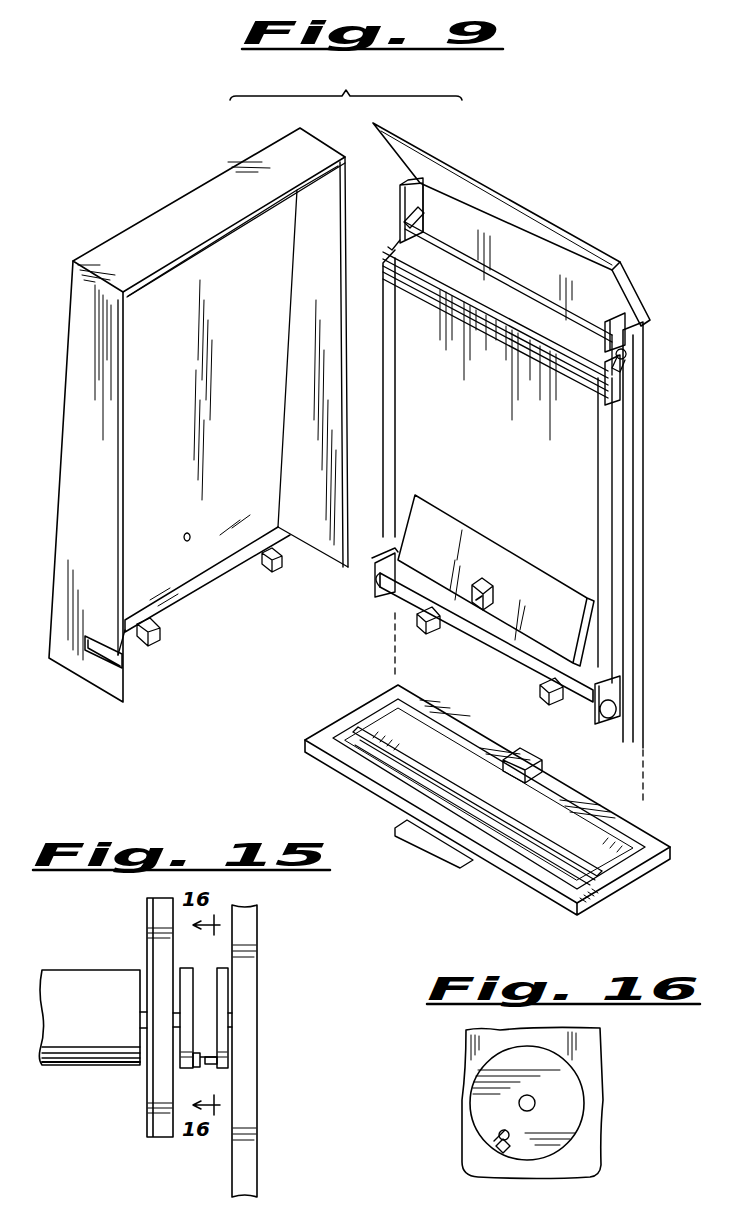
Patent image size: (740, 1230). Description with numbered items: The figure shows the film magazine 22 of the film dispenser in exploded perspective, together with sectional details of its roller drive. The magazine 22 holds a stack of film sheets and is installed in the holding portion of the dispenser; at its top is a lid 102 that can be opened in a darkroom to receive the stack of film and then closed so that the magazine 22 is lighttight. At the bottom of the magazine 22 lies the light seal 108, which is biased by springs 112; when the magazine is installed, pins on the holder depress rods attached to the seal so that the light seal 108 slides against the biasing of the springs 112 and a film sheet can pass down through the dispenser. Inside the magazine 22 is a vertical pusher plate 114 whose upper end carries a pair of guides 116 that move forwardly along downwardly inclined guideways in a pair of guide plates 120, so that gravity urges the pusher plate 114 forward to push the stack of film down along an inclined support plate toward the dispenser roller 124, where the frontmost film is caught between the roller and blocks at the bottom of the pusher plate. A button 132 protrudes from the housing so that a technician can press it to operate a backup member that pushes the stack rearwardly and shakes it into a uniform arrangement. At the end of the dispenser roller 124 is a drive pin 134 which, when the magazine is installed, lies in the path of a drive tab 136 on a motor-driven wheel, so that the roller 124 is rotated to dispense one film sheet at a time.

In FIG. 9, the film magazine 22 is at (275, 677).
In FIG. 9, the lid 102 is at (636, 292).
In FIG. 9, the light seal 108 is at (386, 746).
In FIG. 9, the springs 112 is at (385, 726).
In FIG. 9, the pusher plate 114 is at (572, 324).
In FIG. 9, the guides 116 is at (405, 218).
In FIG. 9, the guide plates 120 is at (400, 200).
In FIG. 9, the dispenser roller 124 is at (528, 657).
In FIG. 15, the dispenser roller 124 is at (75, 980).
In FIG. 9, the button 132 is at (475, 602).
In FIG. 9, the drive pin 134 is at (616, 722).
In FIG. 15, the drive pin 134 is at (208, 1055).
In FIG. 16, the drive pin 134 is at (498, 1133).
In FIG. 15, the drive tab 136 is at (206, 1066).
In FIG. 16, the drive tab 136 is at (493, 1147).